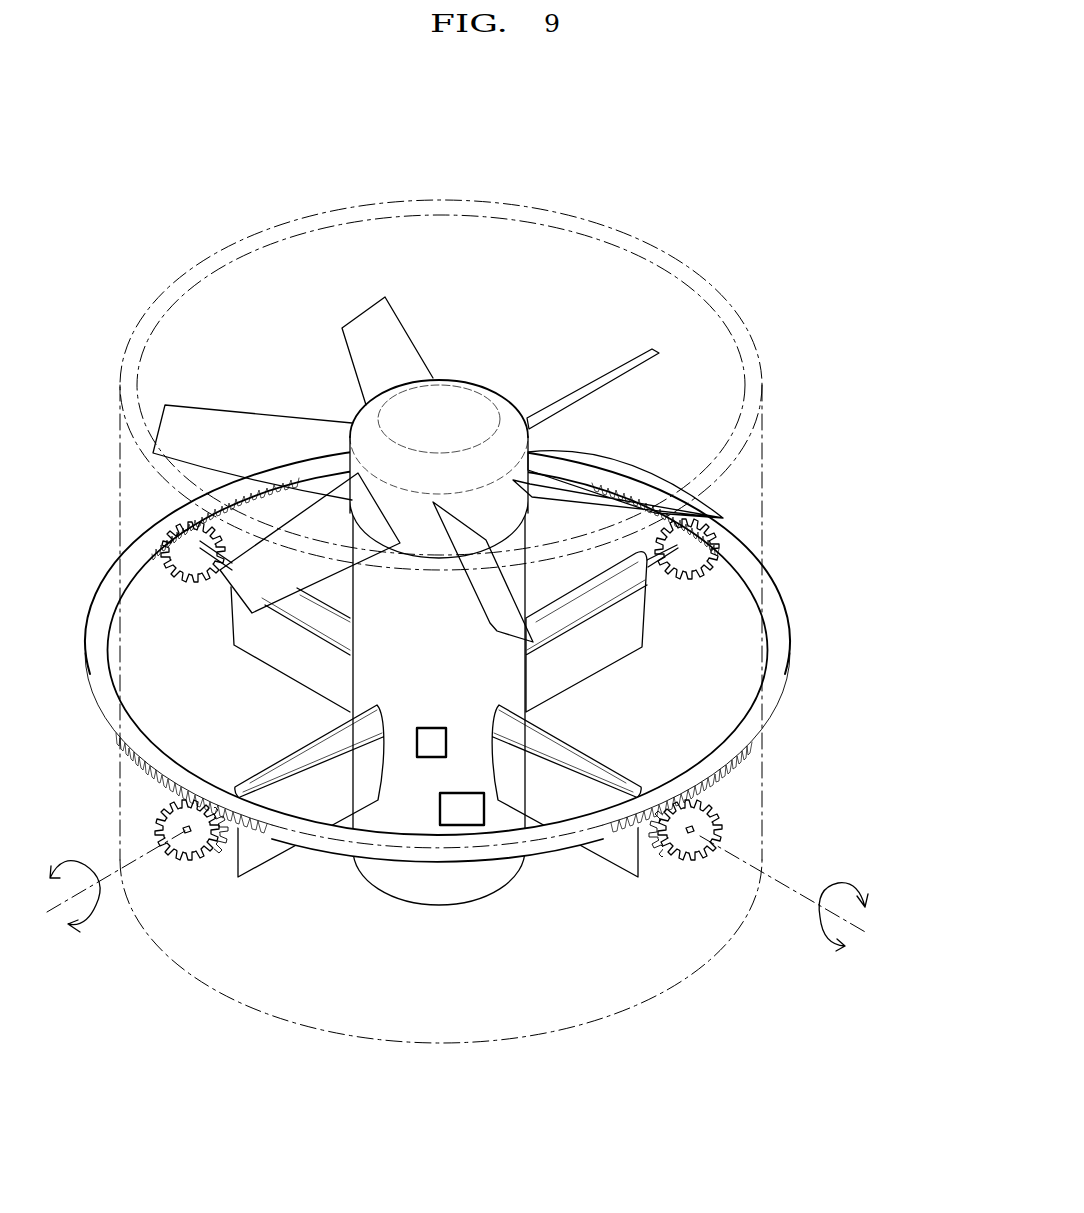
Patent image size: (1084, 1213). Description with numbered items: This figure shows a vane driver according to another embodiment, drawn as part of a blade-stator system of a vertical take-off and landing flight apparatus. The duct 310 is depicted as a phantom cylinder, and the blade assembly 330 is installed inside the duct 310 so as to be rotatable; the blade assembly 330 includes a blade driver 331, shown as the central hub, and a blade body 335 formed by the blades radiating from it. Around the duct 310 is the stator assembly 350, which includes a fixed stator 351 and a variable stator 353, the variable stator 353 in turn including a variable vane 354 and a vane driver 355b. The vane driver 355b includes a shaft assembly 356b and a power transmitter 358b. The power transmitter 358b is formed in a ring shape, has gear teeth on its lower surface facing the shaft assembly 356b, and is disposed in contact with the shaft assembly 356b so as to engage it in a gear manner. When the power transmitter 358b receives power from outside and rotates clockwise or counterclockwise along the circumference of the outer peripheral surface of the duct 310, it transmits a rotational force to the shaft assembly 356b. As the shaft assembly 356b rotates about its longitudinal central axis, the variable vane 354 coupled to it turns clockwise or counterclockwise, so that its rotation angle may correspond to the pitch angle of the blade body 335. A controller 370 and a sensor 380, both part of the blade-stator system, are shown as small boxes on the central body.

The duct 310 is at (762, 436).
The blade assembly 330 is at (438, 386).
The blade driver 331 is at (397, 418).
The blade body 335 is at (310, 522).
The stator assembly 350 is at (504, 698).
The fixed stator 351 is at (630, 862).
The variable stator 353 is at (482, 714).
The variable vane 354 is at (606, 767).
The vane driver 355b is at (459, 714).
The shaft assembly 356b is at (711, 824).
The power transmitter 358b is at (720, 767).
The controller 370 is at (460, 825).
The sensor 380 is at (428, 757).